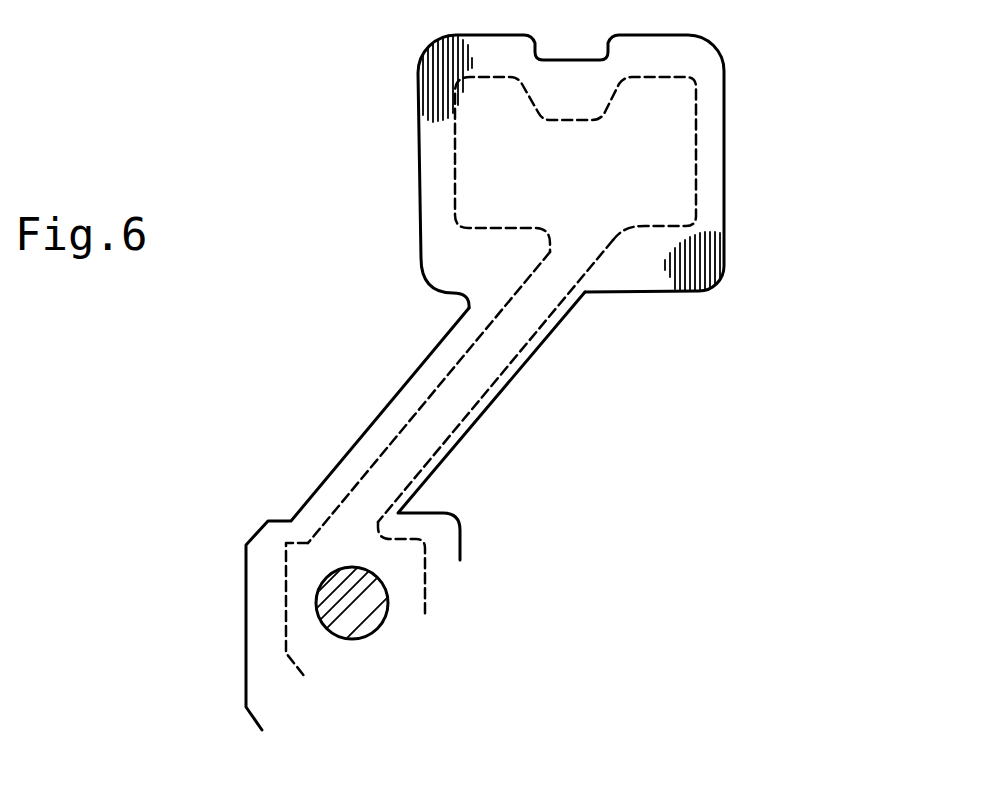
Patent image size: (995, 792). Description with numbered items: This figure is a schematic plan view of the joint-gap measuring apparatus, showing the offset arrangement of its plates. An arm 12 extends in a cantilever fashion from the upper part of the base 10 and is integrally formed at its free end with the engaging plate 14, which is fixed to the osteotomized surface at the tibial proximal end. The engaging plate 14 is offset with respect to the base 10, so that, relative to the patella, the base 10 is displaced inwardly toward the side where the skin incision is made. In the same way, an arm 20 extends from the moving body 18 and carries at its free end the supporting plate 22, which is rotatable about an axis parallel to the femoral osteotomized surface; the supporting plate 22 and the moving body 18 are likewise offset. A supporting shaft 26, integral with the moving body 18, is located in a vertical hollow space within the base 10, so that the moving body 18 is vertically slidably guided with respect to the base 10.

The base 10 is at (462, 524).
The arm 12 is at (532, 360).
The engaging plate 14 is at (683, 63).
The moving body 18 is at (285, 612).
The arm 20 is at (487, 413).
The supporting plate 22 is at (697, 143).
The supporting shaft 26 is at (387, 597).